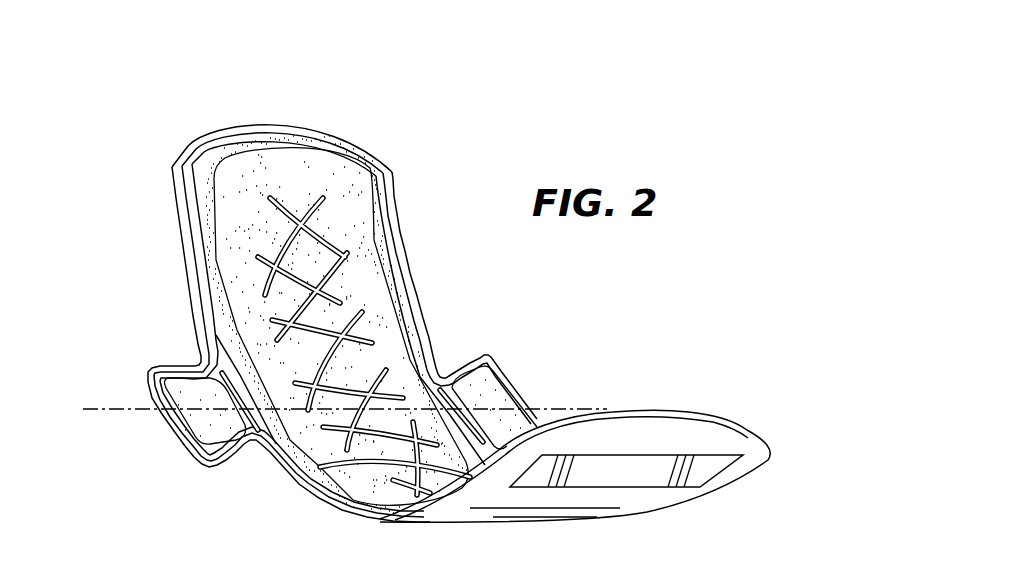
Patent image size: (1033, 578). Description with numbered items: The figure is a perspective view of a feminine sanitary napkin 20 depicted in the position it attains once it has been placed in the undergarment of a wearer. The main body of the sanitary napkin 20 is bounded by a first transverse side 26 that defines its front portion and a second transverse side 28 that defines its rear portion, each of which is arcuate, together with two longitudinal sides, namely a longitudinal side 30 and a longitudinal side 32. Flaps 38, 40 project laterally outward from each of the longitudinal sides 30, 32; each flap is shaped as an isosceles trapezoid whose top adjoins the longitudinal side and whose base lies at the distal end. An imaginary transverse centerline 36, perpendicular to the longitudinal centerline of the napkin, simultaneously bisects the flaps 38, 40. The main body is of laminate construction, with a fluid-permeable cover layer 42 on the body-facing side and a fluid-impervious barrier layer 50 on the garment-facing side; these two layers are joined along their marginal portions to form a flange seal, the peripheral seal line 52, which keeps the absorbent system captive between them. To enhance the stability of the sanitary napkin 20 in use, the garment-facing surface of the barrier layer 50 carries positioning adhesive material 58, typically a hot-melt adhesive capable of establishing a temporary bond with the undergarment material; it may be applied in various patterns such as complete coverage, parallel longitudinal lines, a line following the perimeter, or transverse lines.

The sanitary napkin 20 is at (582, 347).
The first transverse side 26 is at (707, 417).
The second transverse side 28 is at (310, 133).
The longitudinal side 30 is at (427, 330).
The longitudinal side 32 is at (194, 333).
The transverse centerline 36 is at (97, 413).
The flap 38 is at (497, 360).
The flap 40 is at (140, 362).
The fluid-permeable cover layer 42 is at (310, 178).
The fluid-impervious barrier layer 50 is at (713, 440).
The peripheral seal line 52 is at (193, 245).
The positioning adhesive material 58 is at (702, 475).